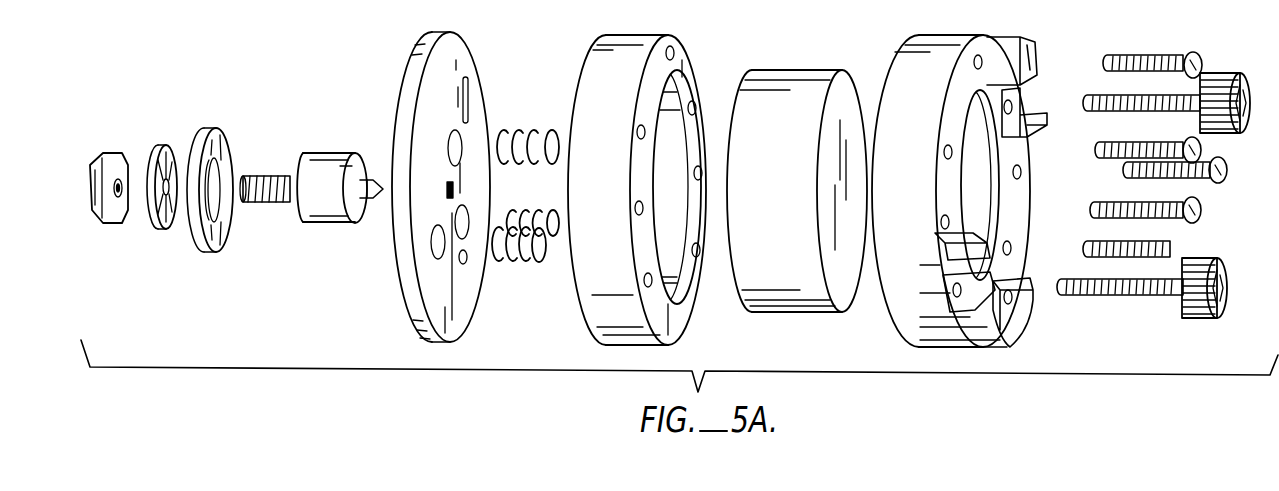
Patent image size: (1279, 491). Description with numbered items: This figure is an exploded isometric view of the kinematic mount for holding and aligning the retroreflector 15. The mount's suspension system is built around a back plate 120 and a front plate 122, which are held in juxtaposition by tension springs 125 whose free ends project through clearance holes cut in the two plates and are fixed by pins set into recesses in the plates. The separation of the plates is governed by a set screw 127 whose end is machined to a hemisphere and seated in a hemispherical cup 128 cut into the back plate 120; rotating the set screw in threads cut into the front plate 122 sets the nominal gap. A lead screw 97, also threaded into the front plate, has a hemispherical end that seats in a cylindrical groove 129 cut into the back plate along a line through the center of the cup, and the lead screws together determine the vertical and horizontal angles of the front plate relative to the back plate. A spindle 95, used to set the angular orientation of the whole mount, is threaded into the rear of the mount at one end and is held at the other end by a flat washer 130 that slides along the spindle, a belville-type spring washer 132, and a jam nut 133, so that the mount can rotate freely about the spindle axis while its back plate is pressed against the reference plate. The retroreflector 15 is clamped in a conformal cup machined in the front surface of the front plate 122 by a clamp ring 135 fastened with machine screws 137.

The retroreflector 15 is at (788, 70).
The spindle 95 is at (323, 152).
The lead screw 97 is at (1222, 78).
The back plate 120 is at (467, 176).
The front plate 122 is at (637, 37).
The tension springs 125 is at (518, 132).
The set screw 127 is at (1157, 238).
The hemispherical cup 128 is at (467, 262).
The cylindrical groove 129 is at (466, 95).
The flat washer 130 is at (212, 124).
The belville-type spring washer 132 is at (153, 145).
The jam nut 133 is at (109, 152).
The clamp ring 135 is at (957, 33).
The machine screws 137 is at (1148, 62).